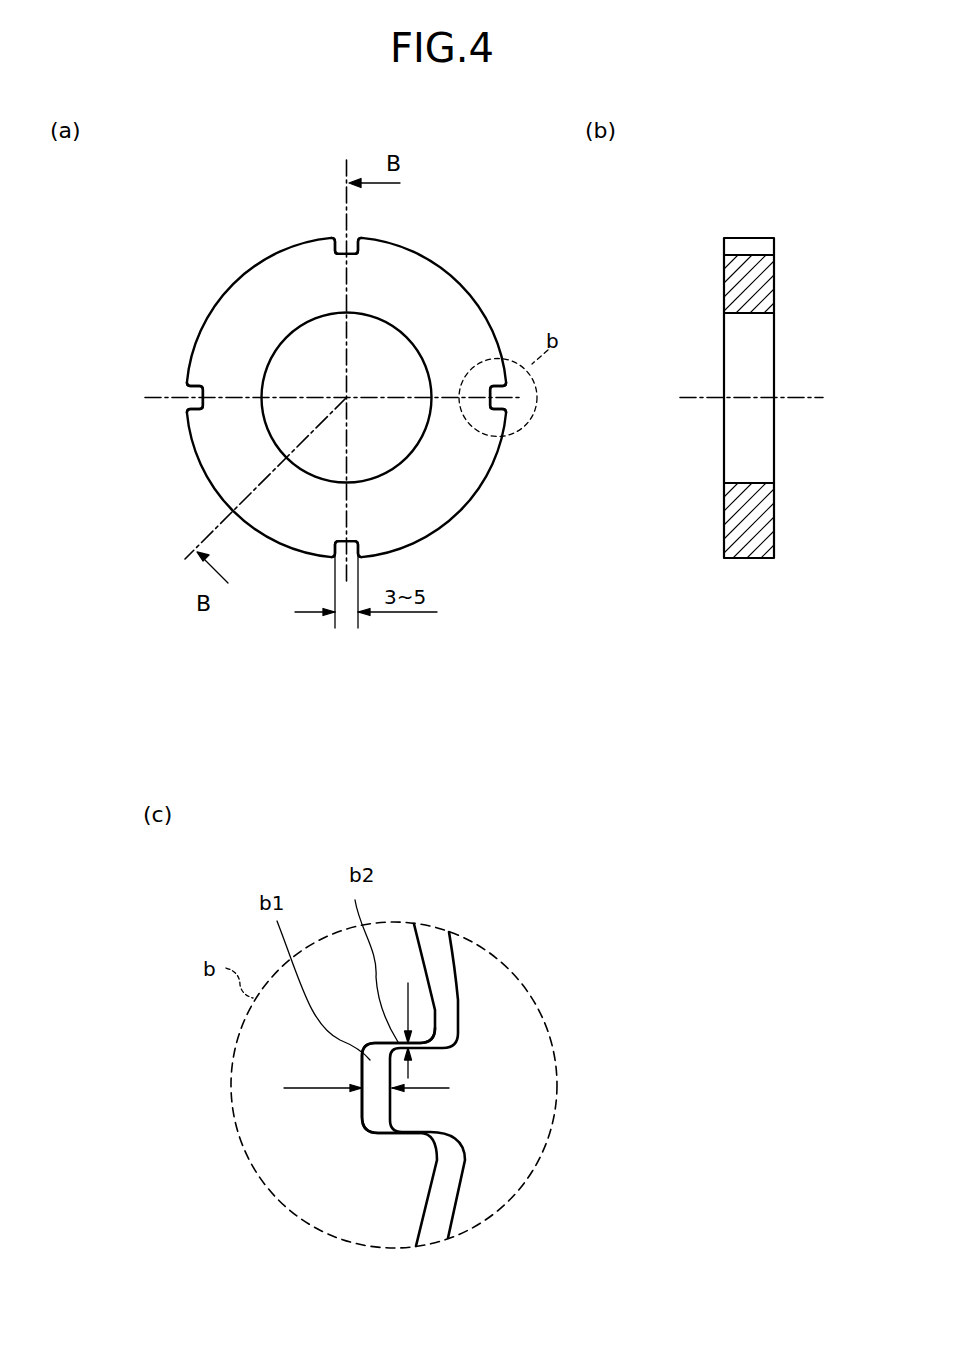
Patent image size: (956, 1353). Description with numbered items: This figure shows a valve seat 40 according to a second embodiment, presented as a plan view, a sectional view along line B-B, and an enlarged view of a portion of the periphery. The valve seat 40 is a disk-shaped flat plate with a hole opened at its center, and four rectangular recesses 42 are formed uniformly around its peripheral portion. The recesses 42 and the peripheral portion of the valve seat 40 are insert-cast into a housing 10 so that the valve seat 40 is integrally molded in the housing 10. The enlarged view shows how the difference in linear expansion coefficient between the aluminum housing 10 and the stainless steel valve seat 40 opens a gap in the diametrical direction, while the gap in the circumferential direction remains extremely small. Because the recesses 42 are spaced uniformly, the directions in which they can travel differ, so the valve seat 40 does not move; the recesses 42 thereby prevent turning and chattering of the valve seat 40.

The valve seat 40 is at (253, 277).
The rectangular recess 42 is at (337, 236).
The housing 10 is at (492, 1017).